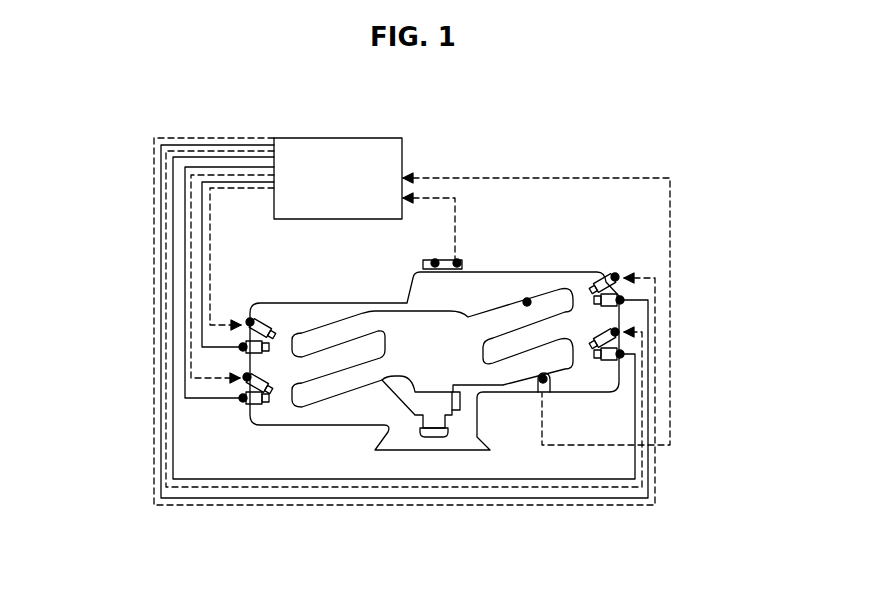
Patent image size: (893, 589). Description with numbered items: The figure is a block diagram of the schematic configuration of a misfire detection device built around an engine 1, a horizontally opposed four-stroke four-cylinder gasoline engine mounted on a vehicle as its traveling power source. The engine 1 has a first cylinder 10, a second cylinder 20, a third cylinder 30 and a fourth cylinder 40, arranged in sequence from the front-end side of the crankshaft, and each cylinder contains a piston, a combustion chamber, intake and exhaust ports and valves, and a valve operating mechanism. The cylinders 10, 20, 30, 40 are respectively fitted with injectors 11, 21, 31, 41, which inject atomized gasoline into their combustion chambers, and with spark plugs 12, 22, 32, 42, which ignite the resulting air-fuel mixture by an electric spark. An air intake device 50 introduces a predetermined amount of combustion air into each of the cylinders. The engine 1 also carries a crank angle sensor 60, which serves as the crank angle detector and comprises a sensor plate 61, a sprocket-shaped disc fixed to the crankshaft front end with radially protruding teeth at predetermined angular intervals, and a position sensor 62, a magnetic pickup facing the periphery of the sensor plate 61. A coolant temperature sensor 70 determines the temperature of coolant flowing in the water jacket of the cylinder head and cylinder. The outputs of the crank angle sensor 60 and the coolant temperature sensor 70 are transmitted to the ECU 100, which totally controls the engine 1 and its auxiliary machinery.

The engine 1 is at (510, 253).
The ECU 100 is at (401, 138).
The crank angle sensor 60 is at (472, 135).
The sensor plate 61 is at (435, 263).
The position sensor 62 is at (457, 263).
The air intake device 50 is at (527, 302).
The first cylinder 10 is at (590, 275).
The injector 11 is at (617, 277).
The spark plug 12 is at (622, 300).
The second cylinder 20 is at (218, 288).
The injector 21 is at (248, 321).
The spark plug 22 is at (241, 346).
The third cylinder 30 is at (600, 372).
The injector 31 is at (617, 332).
The spark plug 32 is at (622, 355).
The fourth cylinder 40 is at (235, 420).
The injector 41 is at (245, 376).
The spark plug 42 is at (241, 397).
The coolant temperature sensor 70 is at (543, 379).